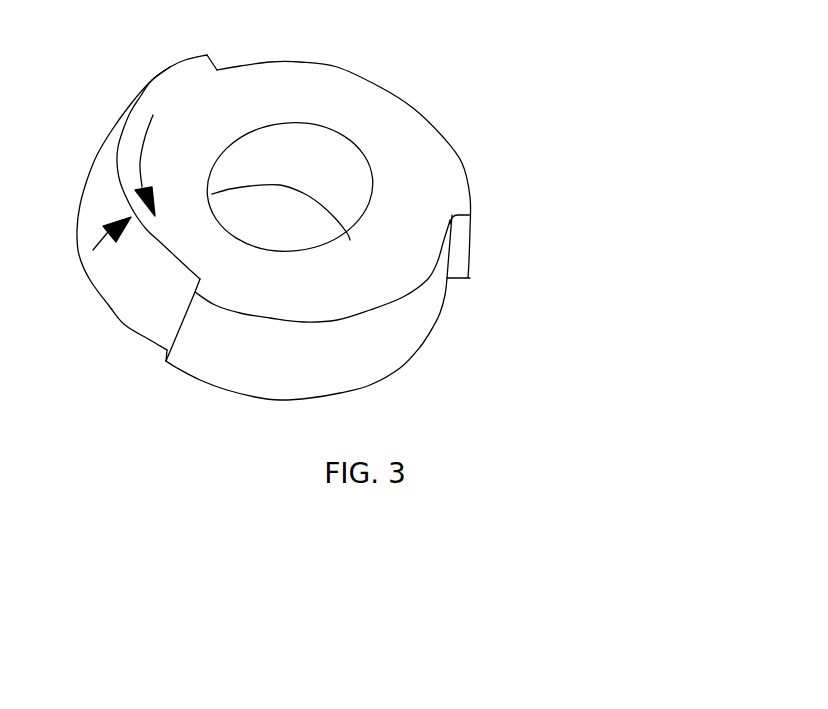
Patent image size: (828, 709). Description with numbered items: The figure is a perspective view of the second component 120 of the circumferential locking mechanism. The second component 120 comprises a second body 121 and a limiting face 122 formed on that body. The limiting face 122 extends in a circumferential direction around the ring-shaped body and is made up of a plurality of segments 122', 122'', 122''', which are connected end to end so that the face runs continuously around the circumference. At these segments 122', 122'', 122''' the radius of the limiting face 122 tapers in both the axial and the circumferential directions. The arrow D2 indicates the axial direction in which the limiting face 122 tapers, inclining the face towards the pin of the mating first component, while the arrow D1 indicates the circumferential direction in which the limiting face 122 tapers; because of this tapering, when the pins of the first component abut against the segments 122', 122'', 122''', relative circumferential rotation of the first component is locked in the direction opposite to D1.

The second component 120 is at (357, 34).
The second body 121 is at (385, 127).
The limiting face 122 is at (369, 230).
The segment 122' is at (325, 214).
The segment 122'' is at (398, 169).
The segment 122''' is at (375, 307).
The arrow D1 is at (153, 165).
The arrow D2 is at (108, 225).